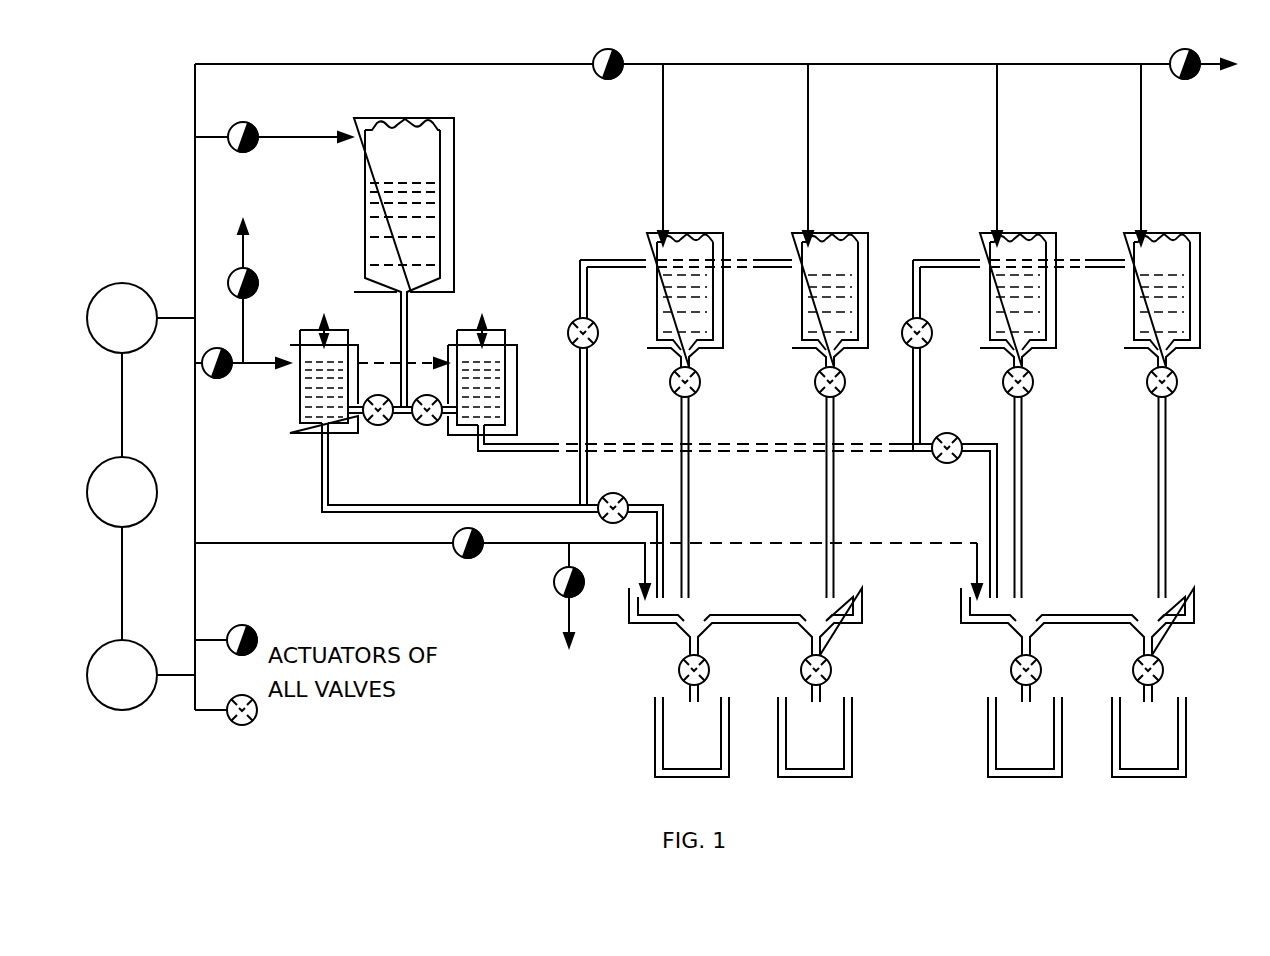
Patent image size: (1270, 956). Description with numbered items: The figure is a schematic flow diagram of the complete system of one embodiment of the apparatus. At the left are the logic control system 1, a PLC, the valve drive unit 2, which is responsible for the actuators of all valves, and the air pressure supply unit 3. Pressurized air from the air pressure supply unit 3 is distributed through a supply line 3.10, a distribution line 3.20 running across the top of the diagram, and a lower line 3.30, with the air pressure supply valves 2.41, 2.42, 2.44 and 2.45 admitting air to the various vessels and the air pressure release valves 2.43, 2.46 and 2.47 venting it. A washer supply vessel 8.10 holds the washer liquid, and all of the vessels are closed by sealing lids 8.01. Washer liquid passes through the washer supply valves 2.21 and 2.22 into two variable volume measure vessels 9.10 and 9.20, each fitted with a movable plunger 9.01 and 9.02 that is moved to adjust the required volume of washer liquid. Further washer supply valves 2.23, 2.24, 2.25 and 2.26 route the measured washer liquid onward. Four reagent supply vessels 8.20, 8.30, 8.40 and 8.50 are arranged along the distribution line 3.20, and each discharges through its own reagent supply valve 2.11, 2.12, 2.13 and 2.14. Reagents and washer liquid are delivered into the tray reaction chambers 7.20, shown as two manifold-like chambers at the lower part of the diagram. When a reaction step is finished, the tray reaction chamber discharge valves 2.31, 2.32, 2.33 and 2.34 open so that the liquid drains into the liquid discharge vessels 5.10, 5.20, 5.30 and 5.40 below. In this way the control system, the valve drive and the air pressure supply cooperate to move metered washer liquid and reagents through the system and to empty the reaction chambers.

The logic control system 1 is at (122, 492).
The valve drive unit 2 is at (122, 675).
The air pressure supply unit 3 is at (122, 318).
The pressure gas supply line 3.10 is at (193, 183).
The gas distribution line 3.20 is at (997, 160).
The gas line to distributors 3.30 is at (712, 543).
The sealing lids 8.01 is at (354, 117).
The washer supply vessel 8.10 is at (455, 195).
The reagent supply vessel 8.20 is at (708, 232).
The reagent supply vessel 8.30 is at (855, 232).
The reagent supply vessel 8.40 is at (1045, 232).
The reagent supply vessel 8.50 is at (1190, 232).
The movable plunger 9.01 is at (342, 330).
The movable plunger 9.02 is at (503, 332).
The variable volume measure vessel 9.10 is at (305, 432).
The variable volume measure vessel 9.20 is at (500, 432).
The reagent supply valve 2.11 is at (695, 392).
The reagent supply valve 2.12 is at (817, 375).
The reagent supply valve 2.13 is at (1028, 393).
The reagent supply valve 2.14 is at (1172, 393).
The washer supply valve 2.21 is at (382, 425).
The washer supply valve 2.22 is at (427, 425).
The washer supply valve 2.23 is at (580, 318).
The washer supply valve 2.24 is at (627, 503).
The washer supply valve 2.25 is at (945, 465).
The washer supply valve 2.26 is at (913, 318).
The tray reaction chamber discharge valve 2.31 is at (697, 662).
The tray reaction chamber discharge valve 2.32 is at (827, 662).
The tray reaction chamber discharge valve 2.33 is at (1036, 662).
The tray reaction chamber discharge valve 2.34 is at (1158, 662).
The air pressure supply valve 2.41 is at (246, 151).
The air pressure supply valve 2.42 is at (600, 78).
The air pressure release valve 2.43 is at (1187, 79).
The air pressure supply valve 2.44 is at (212, 377).
The air pressure supply valve 2.45 is at (460, 556).
The air pressure release valve 2.46 is at (563, 596).
The air pressure release valve 2.47 is at (245, 268).
The liquid discharge vessel 5.10 is at (717, 775).
The liquid discharge vessel 5.20 is at (840, 775).
The liquid discharge vessel 5.30 is at (1050, 775).
The liquid discharge vessel 5.40 is at (1174, 775).
The tray reaction chamber 7.20 is at (845, 590).